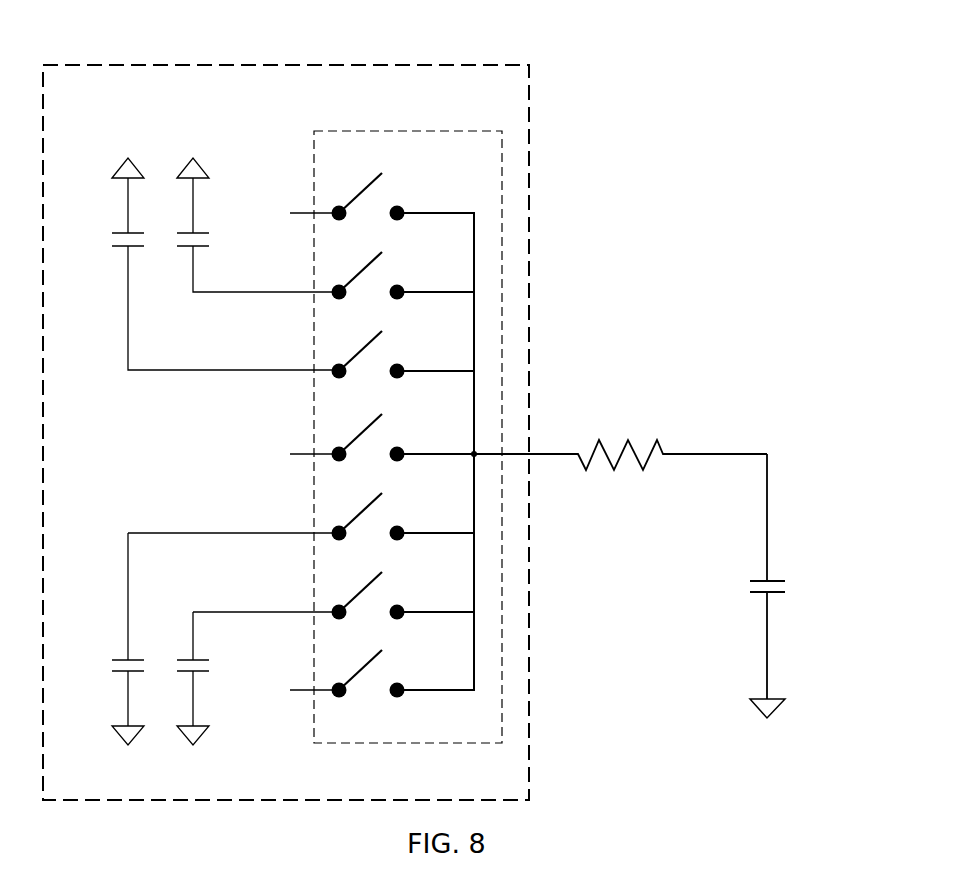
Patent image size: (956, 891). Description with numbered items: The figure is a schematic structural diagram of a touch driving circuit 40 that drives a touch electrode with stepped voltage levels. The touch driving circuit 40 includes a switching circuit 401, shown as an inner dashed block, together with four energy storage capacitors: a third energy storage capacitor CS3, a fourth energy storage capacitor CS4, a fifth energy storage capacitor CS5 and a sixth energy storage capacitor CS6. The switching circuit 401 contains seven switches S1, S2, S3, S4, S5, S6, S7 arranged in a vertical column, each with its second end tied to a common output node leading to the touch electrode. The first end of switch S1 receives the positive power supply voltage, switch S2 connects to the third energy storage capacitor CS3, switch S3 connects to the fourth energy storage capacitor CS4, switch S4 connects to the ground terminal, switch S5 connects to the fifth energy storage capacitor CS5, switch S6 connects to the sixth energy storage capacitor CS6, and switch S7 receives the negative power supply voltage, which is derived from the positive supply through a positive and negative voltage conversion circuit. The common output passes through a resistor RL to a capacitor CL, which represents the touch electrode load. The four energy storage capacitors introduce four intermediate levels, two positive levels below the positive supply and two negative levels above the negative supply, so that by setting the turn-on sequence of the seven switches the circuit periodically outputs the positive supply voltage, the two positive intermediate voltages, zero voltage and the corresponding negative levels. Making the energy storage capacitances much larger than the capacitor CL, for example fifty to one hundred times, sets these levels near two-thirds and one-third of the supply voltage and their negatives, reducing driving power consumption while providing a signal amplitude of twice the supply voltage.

The touch driving circuit 40 is at (529, 65).
The switching circuit 401 is at (314, 131).
The switch S1 is at (368, 185).
The switch S2 is at (368, 264).
The switch S3 is at (368, 342).
The switch S4 is at (368, 425).
The switch S5 is at (368, 504).
The switch S6 is at (368, 583).
The switch S7 is at (368, 662).
The third energy storage capacitor CS3 is at (254, 225).
The fourth energy storage capacitor CS4 is at (203, 264).
The fifth energy storage capacitor CS5 is at (203, 639).
The sixth energy storage capacitor CS6 is at (254, 678).
The resistor RL is at (620, 434).
The capacitor CL is at (788, 586).